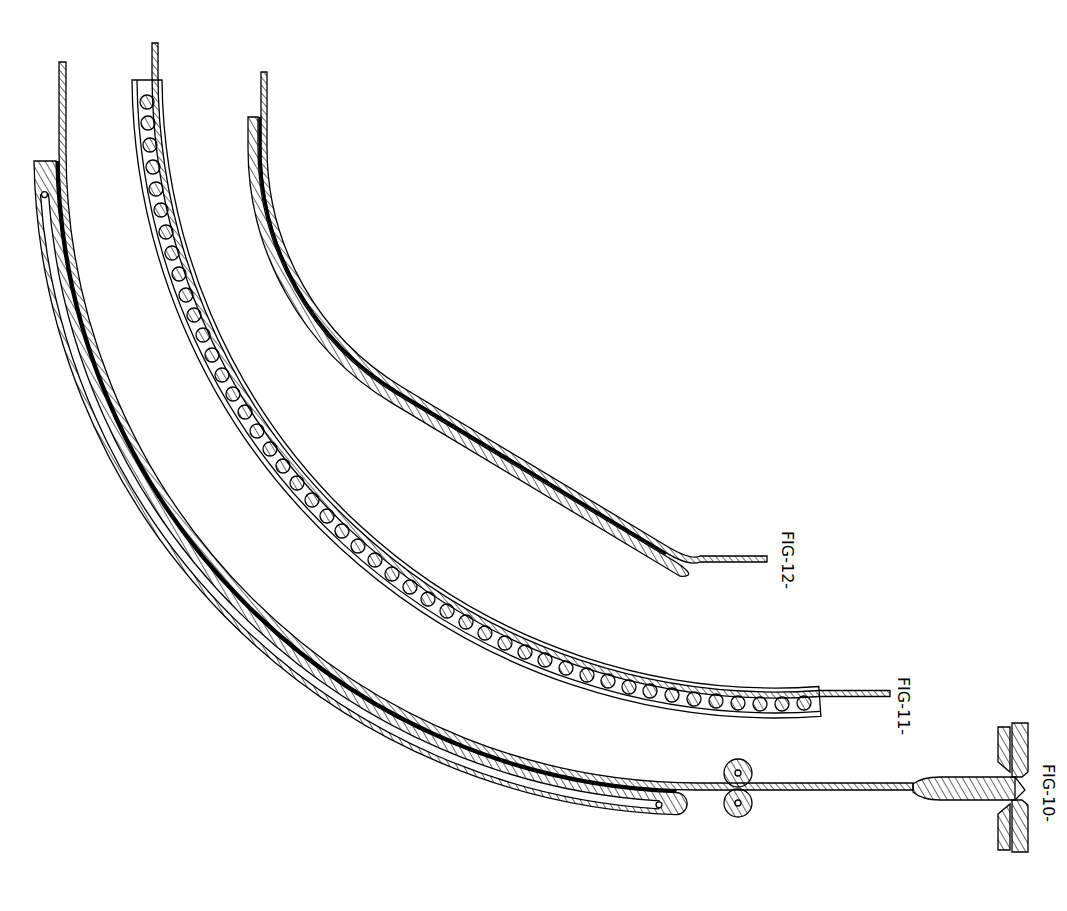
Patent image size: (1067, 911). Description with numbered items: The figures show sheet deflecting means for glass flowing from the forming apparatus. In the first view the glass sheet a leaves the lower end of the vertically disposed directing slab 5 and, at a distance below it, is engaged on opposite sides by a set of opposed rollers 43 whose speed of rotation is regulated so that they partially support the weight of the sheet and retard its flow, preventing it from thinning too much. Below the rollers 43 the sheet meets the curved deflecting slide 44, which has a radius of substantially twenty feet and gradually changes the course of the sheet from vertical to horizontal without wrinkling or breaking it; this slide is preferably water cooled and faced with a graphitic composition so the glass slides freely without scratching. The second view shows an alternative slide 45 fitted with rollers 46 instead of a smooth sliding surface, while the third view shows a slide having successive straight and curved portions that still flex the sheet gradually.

In FIG. 10, the curved deflecting slide 44 is at (330, 698).
In FIG. 10, the wire a is at (822, 790).
In FIG. 10, the opposed rollers 43 is at (752, 812).
In FIG. 10, the directing slab 5 is at (950, 790).
In FIG. 11, the slide 45 is at (393, 580).
In FIG. 11, the rollers 46 is at (298, 490).